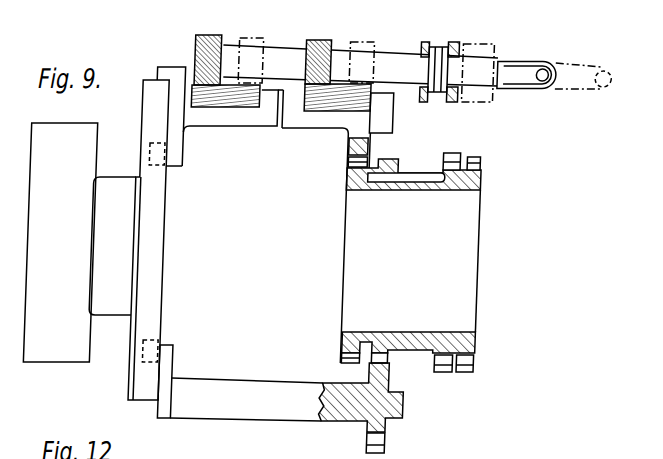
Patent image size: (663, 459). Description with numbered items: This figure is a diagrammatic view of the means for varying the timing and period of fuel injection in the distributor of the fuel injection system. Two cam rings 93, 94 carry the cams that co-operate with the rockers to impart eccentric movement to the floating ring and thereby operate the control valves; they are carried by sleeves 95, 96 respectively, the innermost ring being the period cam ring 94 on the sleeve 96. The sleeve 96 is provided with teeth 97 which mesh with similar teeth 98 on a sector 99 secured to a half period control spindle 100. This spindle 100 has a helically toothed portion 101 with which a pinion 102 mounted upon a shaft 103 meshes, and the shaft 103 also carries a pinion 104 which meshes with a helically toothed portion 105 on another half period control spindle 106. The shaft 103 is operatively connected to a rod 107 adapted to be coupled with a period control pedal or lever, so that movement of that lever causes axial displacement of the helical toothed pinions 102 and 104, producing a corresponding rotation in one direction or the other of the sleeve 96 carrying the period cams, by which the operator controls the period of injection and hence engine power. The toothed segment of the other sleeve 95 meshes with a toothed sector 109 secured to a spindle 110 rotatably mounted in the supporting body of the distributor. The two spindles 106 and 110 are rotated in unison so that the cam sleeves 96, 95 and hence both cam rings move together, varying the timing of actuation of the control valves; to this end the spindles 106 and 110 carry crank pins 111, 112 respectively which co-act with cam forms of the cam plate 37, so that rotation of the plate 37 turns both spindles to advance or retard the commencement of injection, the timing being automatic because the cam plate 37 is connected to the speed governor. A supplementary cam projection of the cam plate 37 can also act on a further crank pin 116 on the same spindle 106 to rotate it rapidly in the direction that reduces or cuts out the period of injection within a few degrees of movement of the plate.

The cam plate 37 is at (161, 245).
The cam ring 93 is at (460, 152).
The period cam ring 94 is at (487, 162).
The sleeve 95 is at (488, 190).
The sleeve 96 is at (434, 192).
The teeth 97 is at (354, 353).
The teeth 98 is at (356, 162).
The sector 99 is at (372, 147).
The half period control spindle 100 is at (298, 120).
The helically toothed portion 101 is at (344, 107).
The pinion 102 is at (324, 40).
The shaft 103 is at (339, 62).
The pinion 104 is at (213, 35).
The helically toothed portion 105 is at (219, 102).
The half period control spindle 106 is at (254, 108).
The rod 107 is at (499, 67).
The toothed sector 109 is at (388, 432).
The spindle 110 is at (284, 405).
The crank pin 111 is at (183, 165).
The crank pin 112 is at (172, 347).
The crank pin 116 is at (172, 66).